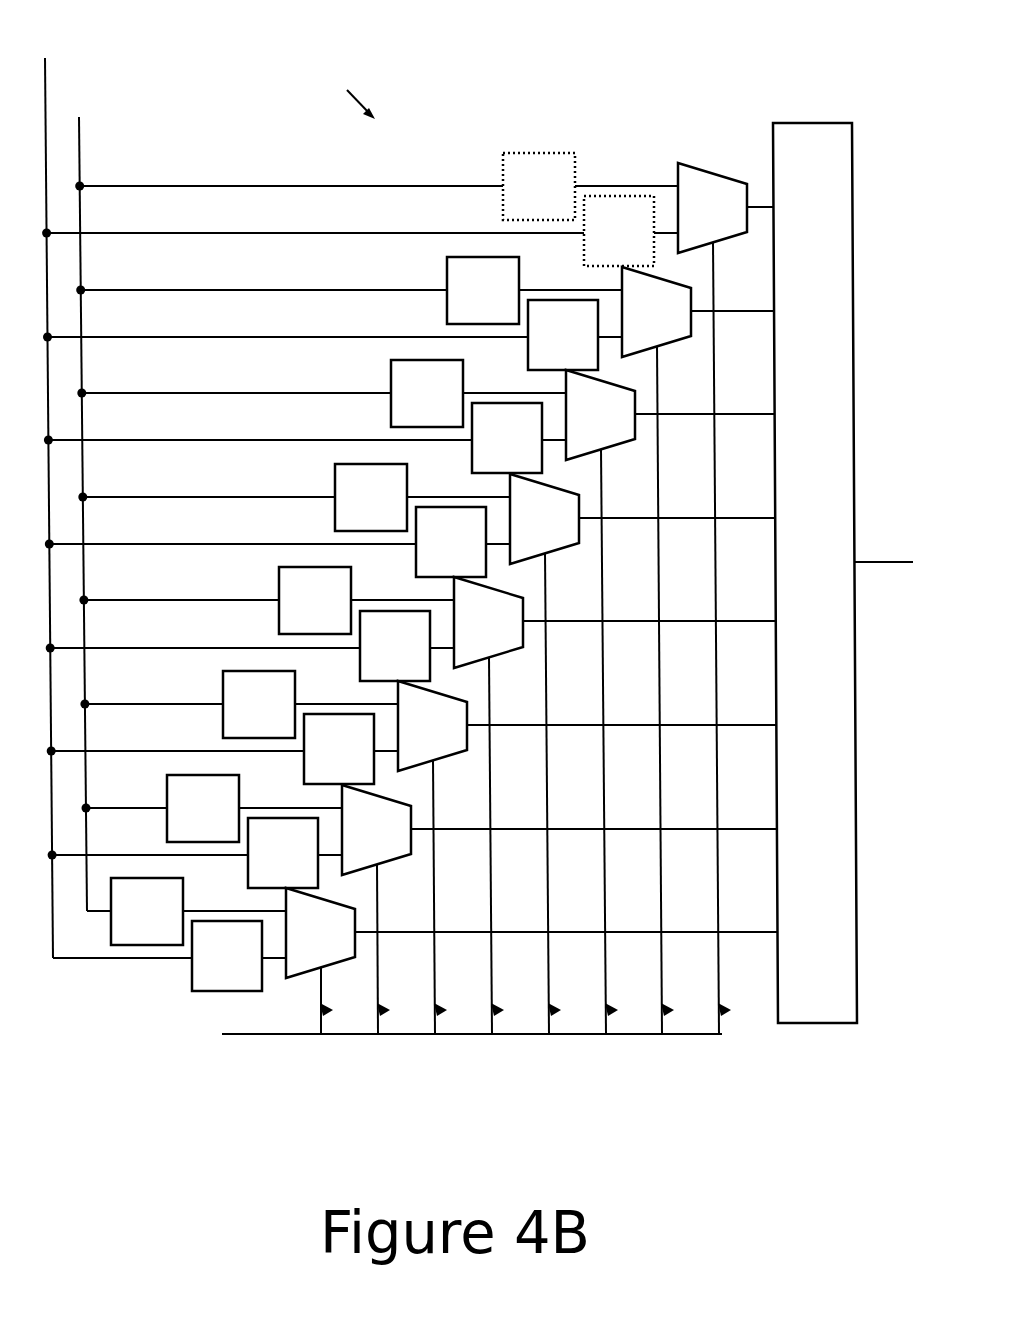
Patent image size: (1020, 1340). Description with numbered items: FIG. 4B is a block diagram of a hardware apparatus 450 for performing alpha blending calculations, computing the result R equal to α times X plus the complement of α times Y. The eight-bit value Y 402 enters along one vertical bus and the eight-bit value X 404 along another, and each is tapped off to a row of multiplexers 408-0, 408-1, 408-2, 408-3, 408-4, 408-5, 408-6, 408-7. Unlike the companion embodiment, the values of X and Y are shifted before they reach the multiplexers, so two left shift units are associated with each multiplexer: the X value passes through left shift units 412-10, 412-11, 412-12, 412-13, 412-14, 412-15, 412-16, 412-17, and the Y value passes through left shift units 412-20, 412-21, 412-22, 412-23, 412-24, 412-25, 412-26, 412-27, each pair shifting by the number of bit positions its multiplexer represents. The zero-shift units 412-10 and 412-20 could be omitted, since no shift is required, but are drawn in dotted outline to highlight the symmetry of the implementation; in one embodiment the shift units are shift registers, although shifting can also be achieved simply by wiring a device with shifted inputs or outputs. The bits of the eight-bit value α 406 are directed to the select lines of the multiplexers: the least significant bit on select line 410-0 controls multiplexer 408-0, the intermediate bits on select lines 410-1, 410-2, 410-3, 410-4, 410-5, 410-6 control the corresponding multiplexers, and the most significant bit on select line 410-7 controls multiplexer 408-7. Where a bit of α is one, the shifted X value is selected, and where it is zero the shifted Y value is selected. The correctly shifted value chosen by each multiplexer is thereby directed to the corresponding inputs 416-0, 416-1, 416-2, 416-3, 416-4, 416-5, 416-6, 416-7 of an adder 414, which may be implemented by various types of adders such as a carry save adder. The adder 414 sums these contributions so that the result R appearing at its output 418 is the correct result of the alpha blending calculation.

The value Y 402 is at (356, 479).
The value X 404 is at (376, 485).
The alpha(7:0) control input bus 406 is at (469, 1065).
The multiplexer 408-0 is at (721, 228).
The multiplexer 408-1 is at (656, 321).
The multiplexer 408-2 is at (600, 424).
The multiplexer 408-3 is at (544, 528).
The multiplexer 408-4 is at (488, 631).
The multiplexer 408-5 is at (432, 735).
The multiplexer 408-6 is at (376, 839).
The multiplexer 408-7 is at (329, 957).
The alpha 0 select signal 410-0 is at (725, 1012).
The alpha 1 select signal 410-1 is at (668, 1012).
The alpha 2 select signal 410-2 is at (612, 1012).
The alpha 3 select signal 410-3 is at (555, 1012).
The alpha 4 select signal 410-4 is at (498, 1012).
The alpha 5 select signal 410-5 is at (441, 1012).
The alpha 6 select signal 410-6 is at (384, 1012).
The alpha 7 select signal (MSB) 410-7 is at (327, 1012).
The left shift unit 412-10 is at (539, 186).
The left shift unit 412-11 is at (483, 290).
The left shift unit 412-12 is at (427, 393).
The left shift unit 412-13 is at (371, 497).
The left shift unit 412-14 is at (315, 600).
The left shift unit 412-15 is at (259, 704).
The left shift unit 412-16 is at (203, 808).
The left shift unit 412-17 is at (147, 911).
The left shift unit 412-20 is at (619, 231).
The left shift unit 412-21 is at (563, 335).
The left shift unit 412-22 is at (507, 438).
The left shift unit 412-23 is at (451, 542).
The left shift unit 412-24 is at (395, 646).
The left shift unit 412-25 is at (339, 749).
The left shift unit 412-26 is at (283, 853).
The left shift unit 412-27 is at (227, 956).
The adder 414 is at (824, 605).
The input of adder 416-0 is at (787, 203).
The input of adder 416-1 is at (759, 307).
The input of adder 416-2 is at (731, 410).
The input of adder 416-3 is at (703, 514).
The input of adder 416-4 is at (675, 617).
The input of adder 416-5 is at (647, 721).
The input of adder 416-6 is at (619, 825).
The input of adder 416-7 is at (591, 928).
The output 418 is at (897, 534).
The multiplier circuit 450 is at (360, 82).